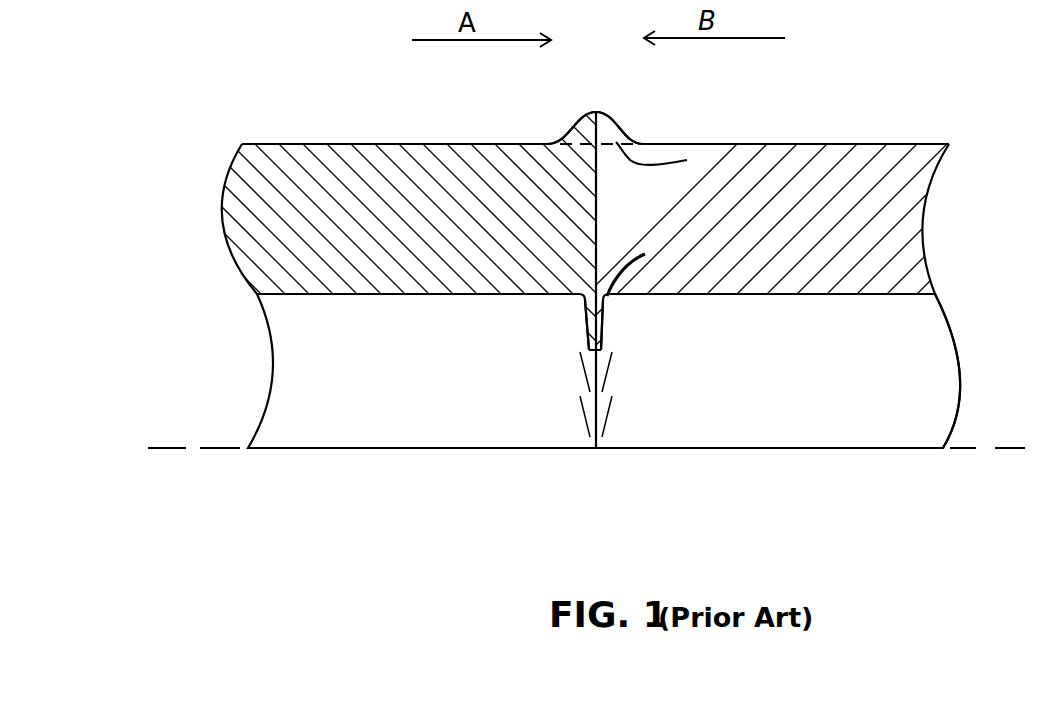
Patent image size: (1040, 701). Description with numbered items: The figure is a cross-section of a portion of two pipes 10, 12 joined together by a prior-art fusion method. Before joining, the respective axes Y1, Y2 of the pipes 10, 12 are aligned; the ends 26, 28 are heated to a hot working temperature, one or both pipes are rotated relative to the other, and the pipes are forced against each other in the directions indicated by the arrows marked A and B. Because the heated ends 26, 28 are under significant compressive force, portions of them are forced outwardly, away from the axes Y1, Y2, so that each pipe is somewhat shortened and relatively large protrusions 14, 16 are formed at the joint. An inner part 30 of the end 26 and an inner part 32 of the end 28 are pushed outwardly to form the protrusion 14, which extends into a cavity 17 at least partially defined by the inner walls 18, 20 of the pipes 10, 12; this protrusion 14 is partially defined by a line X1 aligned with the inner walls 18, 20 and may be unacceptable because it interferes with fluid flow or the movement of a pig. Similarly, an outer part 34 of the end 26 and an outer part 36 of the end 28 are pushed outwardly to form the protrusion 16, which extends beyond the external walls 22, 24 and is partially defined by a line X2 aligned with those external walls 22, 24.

The pipe 10 is at (284, 164).
The pipe 12 is at (907, 160).
The protrusion 14 is at (614, 337).
The protrusion 16 is at (620, 119).
The cavity 17 is at (948, 358).
The inner wall 18 is at (365, 294).
The inner wall 20 is at (815, 294).
The external wall 22 is at (352, 145).
The external wall 24 is at (788, 144).
The end 26 is at (582, 223).
The end 28 is at (652, 223).
The inner part 30 is at (585, 323).
The inner part 32 is at (614, 311).
The outer part 34 is at (582, 136).
The outer part 36 is at (622, 134).
The line X1 is at (645, 270).
The line X2 is at (666, 168).
The axis Y1 is at (160, 448).
The axis Y2 is at (975, 450).